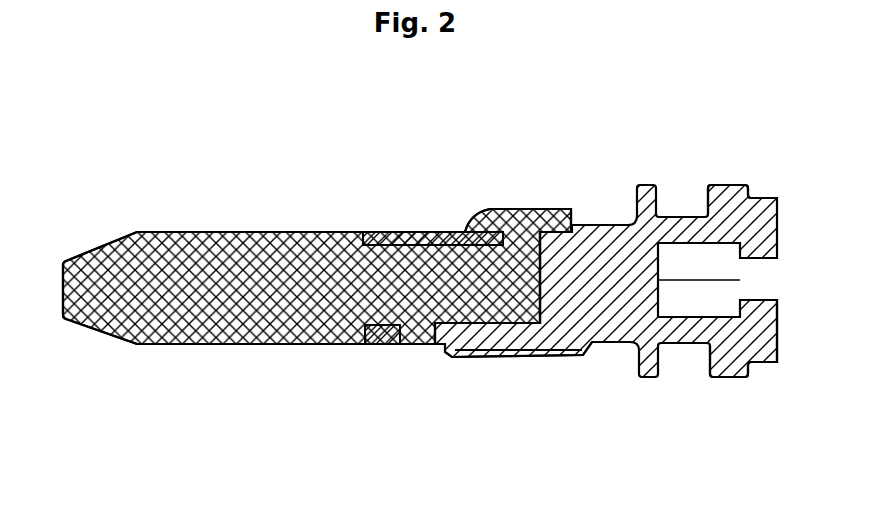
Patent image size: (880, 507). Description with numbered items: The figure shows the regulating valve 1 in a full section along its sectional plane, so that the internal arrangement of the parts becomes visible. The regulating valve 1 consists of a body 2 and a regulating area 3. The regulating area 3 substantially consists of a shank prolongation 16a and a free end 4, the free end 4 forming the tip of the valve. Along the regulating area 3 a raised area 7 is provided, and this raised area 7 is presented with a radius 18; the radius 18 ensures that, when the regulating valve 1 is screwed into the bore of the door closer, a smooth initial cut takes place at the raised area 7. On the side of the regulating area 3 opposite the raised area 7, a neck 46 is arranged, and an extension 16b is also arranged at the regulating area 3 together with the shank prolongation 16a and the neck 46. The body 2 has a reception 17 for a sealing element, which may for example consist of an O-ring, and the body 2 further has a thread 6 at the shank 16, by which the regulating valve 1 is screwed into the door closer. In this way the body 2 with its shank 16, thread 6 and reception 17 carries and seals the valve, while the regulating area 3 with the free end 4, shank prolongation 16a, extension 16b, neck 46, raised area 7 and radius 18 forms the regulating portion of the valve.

The regulating valve 1 is at (588, 99).
The body 2 is at (735, 207).
The regulating area 3 is at (265, 258).
The free end 4 is at (113, 245).
The thread 6 is at (520, 357).
The raised area 7 is at (532, 213).
The shank 16 is at (608, 342).
The shank prolongation 16a is at (240, 345).
The extension 16b is at (455, 280).
The reception 17 is at (689, 358).
The radius 18 is at (473, 217).
The neck 46 is at (400, 343).